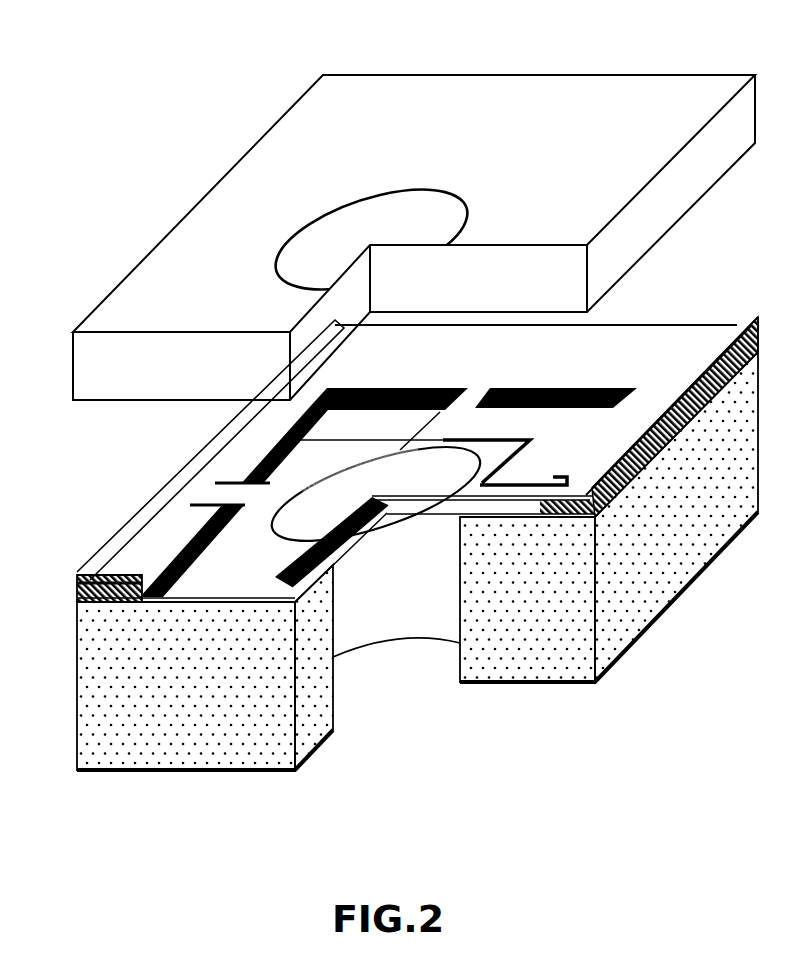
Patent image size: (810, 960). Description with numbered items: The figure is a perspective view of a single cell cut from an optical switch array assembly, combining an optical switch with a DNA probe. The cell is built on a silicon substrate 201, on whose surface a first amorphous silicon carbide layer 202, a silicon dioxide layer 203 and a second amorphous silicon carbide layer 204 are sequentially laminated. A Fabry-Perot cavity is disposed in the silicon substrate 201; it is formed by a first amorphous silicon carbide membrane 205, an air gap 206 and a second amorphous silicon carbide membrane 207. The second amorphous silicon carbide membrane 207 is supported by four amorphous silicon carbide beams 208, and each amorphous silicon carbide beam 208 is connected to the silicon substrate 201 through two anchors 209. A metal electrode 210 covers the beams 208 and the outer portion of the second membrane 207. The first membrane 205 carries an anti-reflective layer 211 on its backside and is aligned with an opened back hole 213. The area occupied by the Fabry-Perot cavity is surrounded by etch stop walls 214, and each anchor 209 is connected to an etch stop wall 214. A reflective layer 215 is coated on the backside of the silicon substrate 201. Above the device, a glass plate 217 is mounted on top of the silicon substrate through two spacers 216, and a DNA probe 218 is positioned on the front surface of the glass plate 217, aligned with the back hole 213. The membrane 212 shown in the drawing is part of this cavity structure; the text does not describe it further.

The silicon substrate 201 is at (113, 693).
The first amorphous silicon carbide layer 202 is at (224, 605).
The silicon dioxide layer 203 is at (657, 452).
The second amorphous silicon carbide layer 204 is at (113, 580).
The first amorphous silicon carbide membrane 205 is at (367, 527).
The air gap 206 is at (403, 512).
The second amorphous silicon carbide membrane 207 is at (427, 497).
The amorphous silicon carbide beam 208 is at (505, 497).
The anchor 209 is at (193, 503).
The metal electrode 210 is at (490, 445).
The anti-reflective layer 211 is at (365, 570).
The membrane 212 is at (497, 345).
The back hole 213 is at (348, 683).
The etch stop wall 214 is at (163, 553).
The reflective layer 215 is at (166, 773).
The spacer 216 is at (693, 377).
The glass plate 217 is at (285, 212).
The DNA probe 218 is at (362, 225).